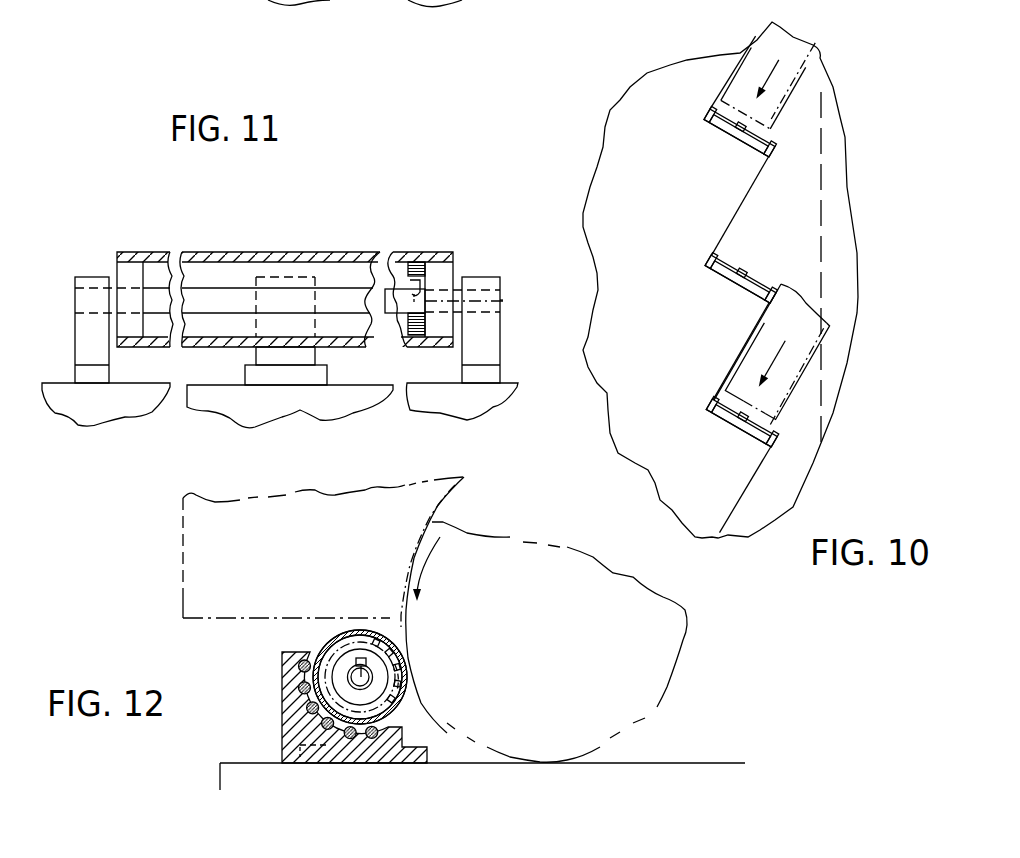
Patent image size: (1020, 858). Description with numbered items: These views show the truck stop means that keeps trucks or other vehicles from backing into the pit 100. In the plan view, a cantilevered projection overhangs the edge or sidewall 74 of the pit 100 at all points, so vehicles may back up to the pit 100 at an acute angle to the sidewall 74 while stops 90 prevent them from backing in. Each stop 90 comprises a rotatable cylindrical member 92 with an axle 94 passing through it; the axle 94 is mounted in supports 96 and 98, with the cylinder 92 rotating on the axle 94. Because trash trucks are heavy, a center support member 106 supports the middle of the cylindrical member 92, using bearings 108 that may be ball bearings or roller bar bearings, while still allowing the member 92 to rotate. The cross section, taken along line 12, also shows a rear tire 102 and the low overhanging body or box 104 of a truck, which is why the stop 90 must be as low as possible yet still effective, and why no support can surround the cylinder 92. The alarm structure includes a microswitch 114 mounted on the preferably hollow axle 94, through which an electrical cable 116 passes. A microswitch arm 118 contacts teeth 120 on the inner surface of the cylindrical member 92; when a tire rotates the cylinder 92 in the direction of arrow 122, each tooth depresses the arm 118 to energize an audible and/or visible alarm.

In FIG. 10, the sidewall 74 is at (822, 180).
In FIG. 10, the stop 90 is at (719, 125).
In FIG. 11, the stop 90 is at (428, 180).
In FIG. 12, the stop 90 is at (258, 663).
In FIG. 11, the rotatable cylindrical member 92 is at (429, 291).
In FIG. 12, the rotatable cylindrical member 92 is at (382, 646).
In FIG. 11, the axle 94 is at (372, 262).
In FIG. 11, the support 96 is at (486, 277).
In FIG. 11, the support 98 is at (90, 277).
In FIG. 10, the pit 100 is at (638, 277).
In FIG. 12, the rear tire 102 is at (683, 652).
In FIG. 12, the body or box 104 is at (182, 580).
In FIG. 11, the center support member 106 is at (256, 355).
In FIG. 12, the center support member 106 is at (282, 728).
In FIG. 12, the bearings 108 is at (315, 662).
In FIG. 11, the microswitch 114 is at (403, 280).
In FIG. 12, the microswitch 114 is at (350, 657).
In FIG. 11, the electrical cable 116 is at (500, 297).
In FIG. 12, the microswitch arm 118 is at (375, 657).
In FIG. 11, the teeth 120 is at (411, 346).
In FIG. 12, the teeth 120 is at (403, 672).
In FIG. 12, the arrow 122 is at (388, 620).
In FIG. 11, the section line 12— 12 is at (284, 194).